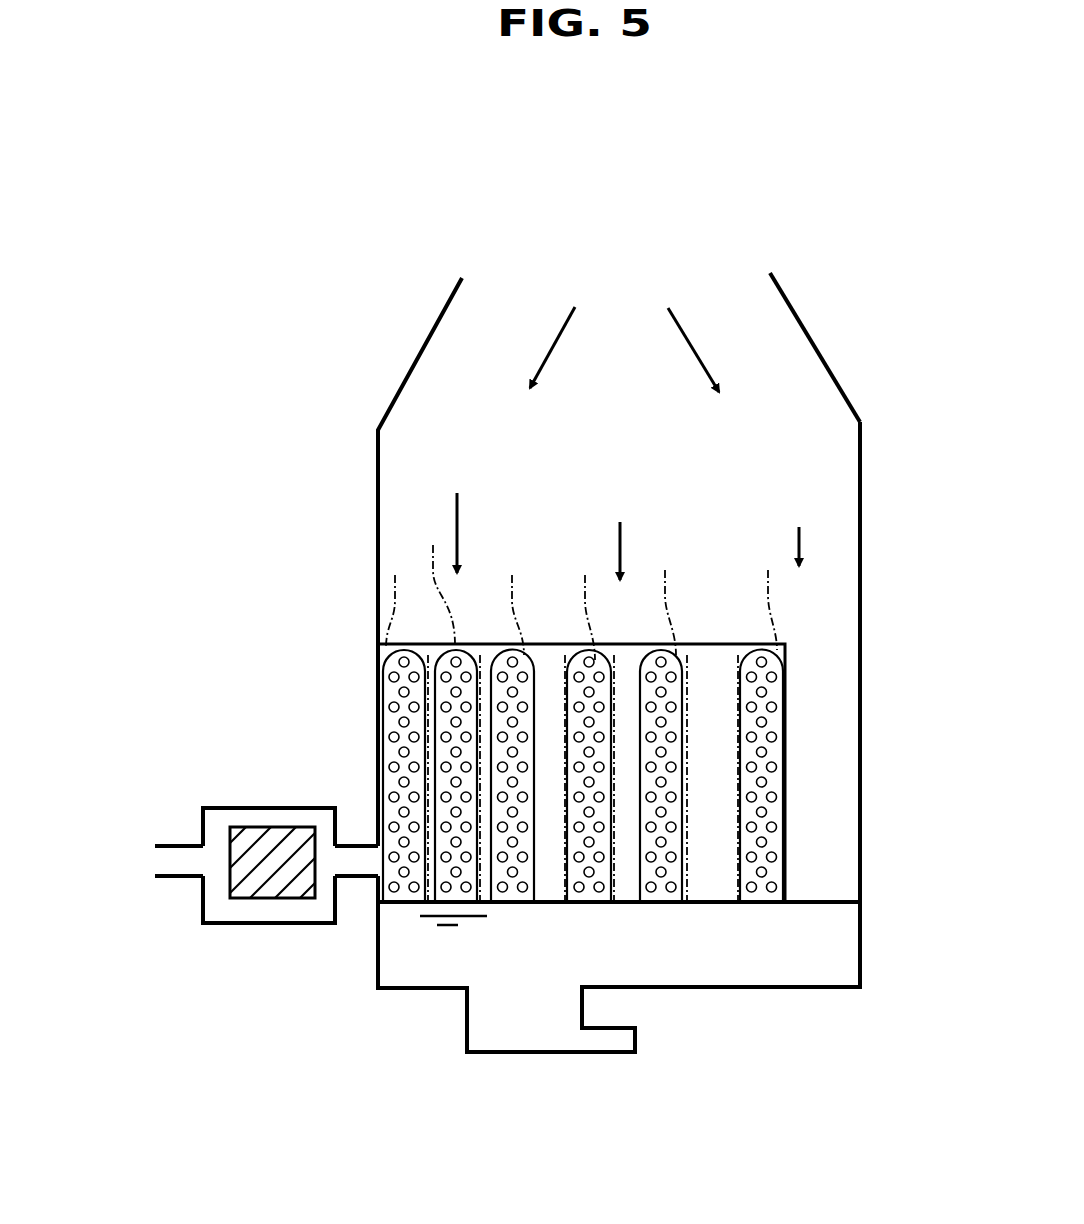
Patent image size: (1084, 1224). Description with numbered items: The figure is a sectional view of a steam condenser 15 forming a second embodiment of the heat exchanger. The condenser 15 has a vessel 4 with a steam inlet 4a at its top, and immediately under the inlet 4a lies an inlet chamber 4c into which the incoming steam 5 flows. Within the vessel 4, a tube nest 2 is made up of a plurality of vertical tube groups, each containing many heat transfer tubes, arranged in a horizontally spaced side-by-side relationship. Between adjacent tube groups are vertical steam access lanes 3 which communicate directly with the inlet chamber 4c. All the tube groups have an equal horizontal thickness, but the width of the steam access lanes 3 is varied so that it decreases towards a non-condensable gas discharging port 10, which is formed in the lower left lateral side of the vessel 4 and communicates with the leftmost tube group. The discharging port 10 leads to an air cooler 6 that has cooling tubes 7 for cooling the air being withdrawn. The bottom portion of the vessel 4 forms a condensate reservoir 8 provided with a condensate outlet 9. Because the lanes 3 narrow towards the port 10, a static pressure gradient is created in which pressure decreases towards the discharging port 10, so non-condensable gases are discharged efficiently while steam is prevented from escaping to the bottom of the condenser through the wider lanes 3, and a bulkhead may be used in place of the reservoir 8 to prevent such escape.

The tube nest 2 is at (787, 692).
The steam access lanes 3 is at (424, 660).
The vessel 4 is at (378, 550).
The inlet 4a is at (748, 316).
The inlet chamber 4c is at (643, 413).
The gas flow 5 is at (563, 328).
The air cooler 6 is at (293, 923).
The cooling tubes 7 is at (247, 898).
The condensate reservoir 8 is at (718, 968).
The condensate outlet 9 is at (630, 1052).
The non-condensable gas discharging port 10 is at (382, 858).
The condenser 15 is at (396, 358).